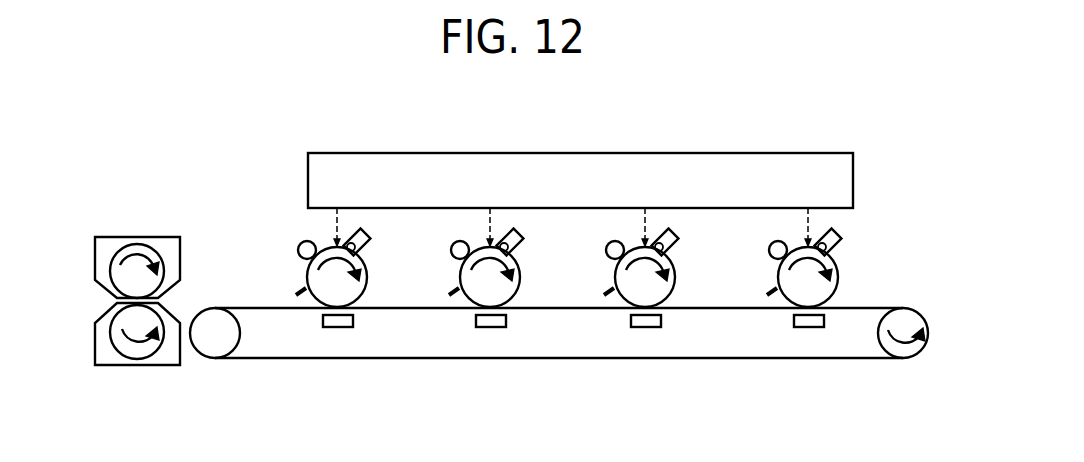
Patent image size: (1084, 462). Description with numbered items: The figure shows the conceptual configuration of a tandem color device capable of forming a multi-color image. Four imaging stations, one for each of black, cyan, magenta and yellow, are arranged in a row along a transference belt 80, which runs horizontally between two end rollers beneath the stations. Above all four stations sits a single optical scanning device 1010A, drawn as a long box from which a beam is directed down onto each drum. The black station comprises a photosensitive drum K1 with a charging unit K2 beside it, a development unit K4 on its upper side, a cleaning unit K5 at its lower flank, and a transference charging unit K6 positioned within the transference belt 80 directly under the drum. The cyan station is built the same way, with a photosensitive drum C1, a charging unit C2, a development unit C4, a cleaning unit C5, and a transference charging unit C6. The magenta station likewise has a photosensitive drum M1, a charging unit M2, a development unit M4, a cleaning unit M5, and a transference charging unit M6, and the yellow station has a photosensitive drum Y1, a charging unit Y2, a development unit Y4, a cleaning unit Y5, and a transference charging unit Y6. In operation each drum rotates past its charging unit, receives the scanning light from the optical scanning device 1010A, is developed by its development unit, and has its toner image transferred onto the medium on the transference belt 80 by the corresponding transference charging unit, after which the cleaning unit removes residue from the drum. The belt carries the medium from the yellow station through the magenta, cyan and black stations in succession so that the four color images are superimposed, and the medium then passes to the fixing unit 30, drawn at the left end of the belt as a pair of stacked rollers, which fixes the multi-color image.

The optical scanning device 1010A is at (633, 153).
The transference belt 80 is at (407, 358).
The fixing unit 30 is at (158, 238).
The photosensitive drum K1 is at (366, 283).
The charging unit K2 is at (299, 249).
The development unit K4 is at (362, 234).
The cleaning unit K5 is at (295, 290).
The transference charging unit K6 is at (353, 321).
The photosensitive drum C1 is at (519, 283).
The charging unit C2 is at (452, 249).
The development unit C4 is at (515, 234).
The cleaning unit C5 is at (448, 290).
The transference charging unit C6 is at (506, 321).
The photosensitive drum M1 is at (674, 283).
The charging unit M2 is at (607, 249).
The development unit M4 is at (670, 234).
The cleaning unit M5 is at (603, 290).
The transference charging unit M6 is at (661, 321).
The photosensitive drum Y1 is at (836, 268).
The charging unit Y2 is at (770, 249).
The development unit Y4 is at (836, 240).
The cleaning unit Y5 is at (766, 290).
The transference charging unit Y6 is at (793, 321).